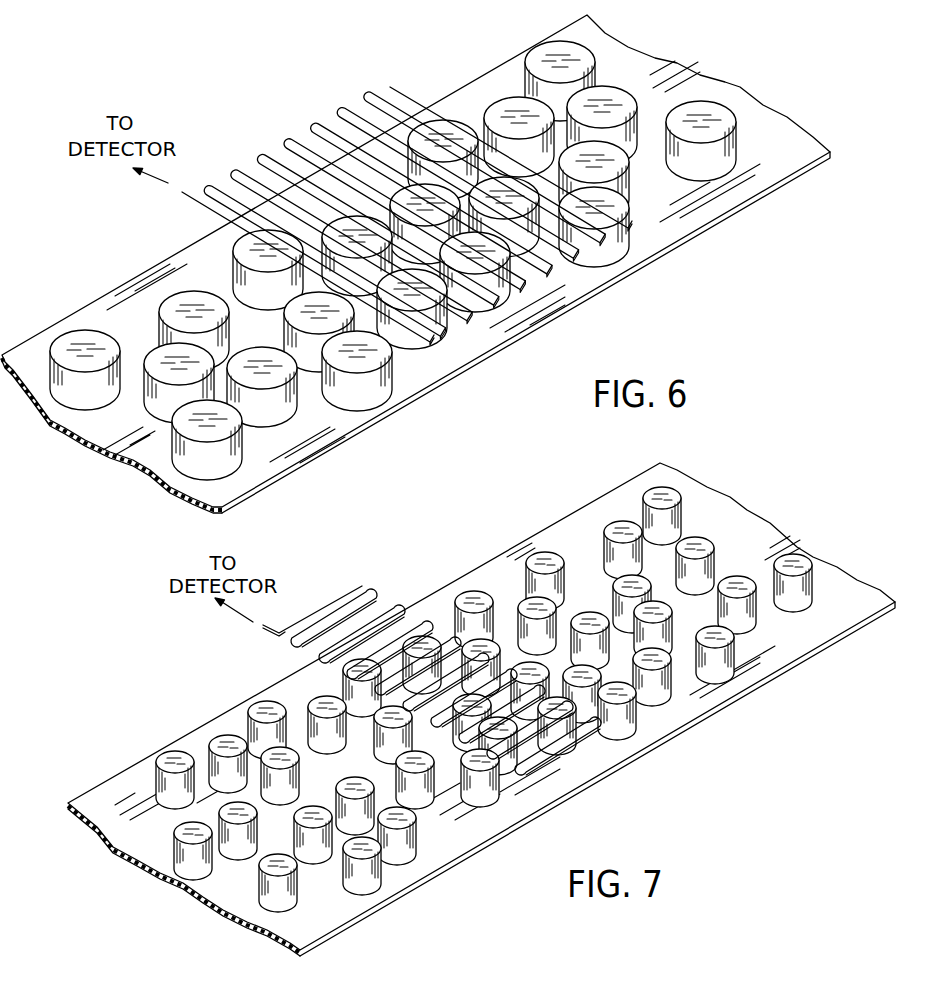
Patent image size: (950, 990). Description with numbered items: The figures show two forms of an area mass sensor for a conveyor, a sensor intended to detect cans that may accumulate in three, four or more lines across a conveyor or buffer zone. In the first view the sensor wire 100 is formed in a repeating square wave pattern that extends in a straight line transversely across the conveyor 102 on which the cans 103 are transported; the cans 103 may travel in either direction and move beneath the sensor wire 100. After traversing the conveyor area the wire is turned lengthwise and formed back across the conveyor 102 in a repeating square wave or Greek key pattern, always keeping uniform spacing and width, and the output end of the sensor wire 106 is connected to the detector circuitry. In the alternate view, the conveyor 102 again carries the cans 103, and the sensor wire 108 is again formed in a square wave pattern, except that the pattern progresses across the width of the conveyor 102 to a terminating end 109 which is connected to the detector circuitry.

In FIG. 6, the sensor wire 100 is at (303, 114).
In FIG. 6, the conveyor 102 is at (682, 84).
In FIG. 7, the conveyor 102 is at (757, 538).
In FIG. 6, the cans 103 is at (628, 88).
In FIG. 7, the cans 103 is at (699, 540).
In FIG. 6, the output end of the sensor wire 106 is at (190, 200).
In FIG. 7, the sensor wire 108 is at (578, 770).
In FIG. 7, the terminating end 109 is at (270, 634).